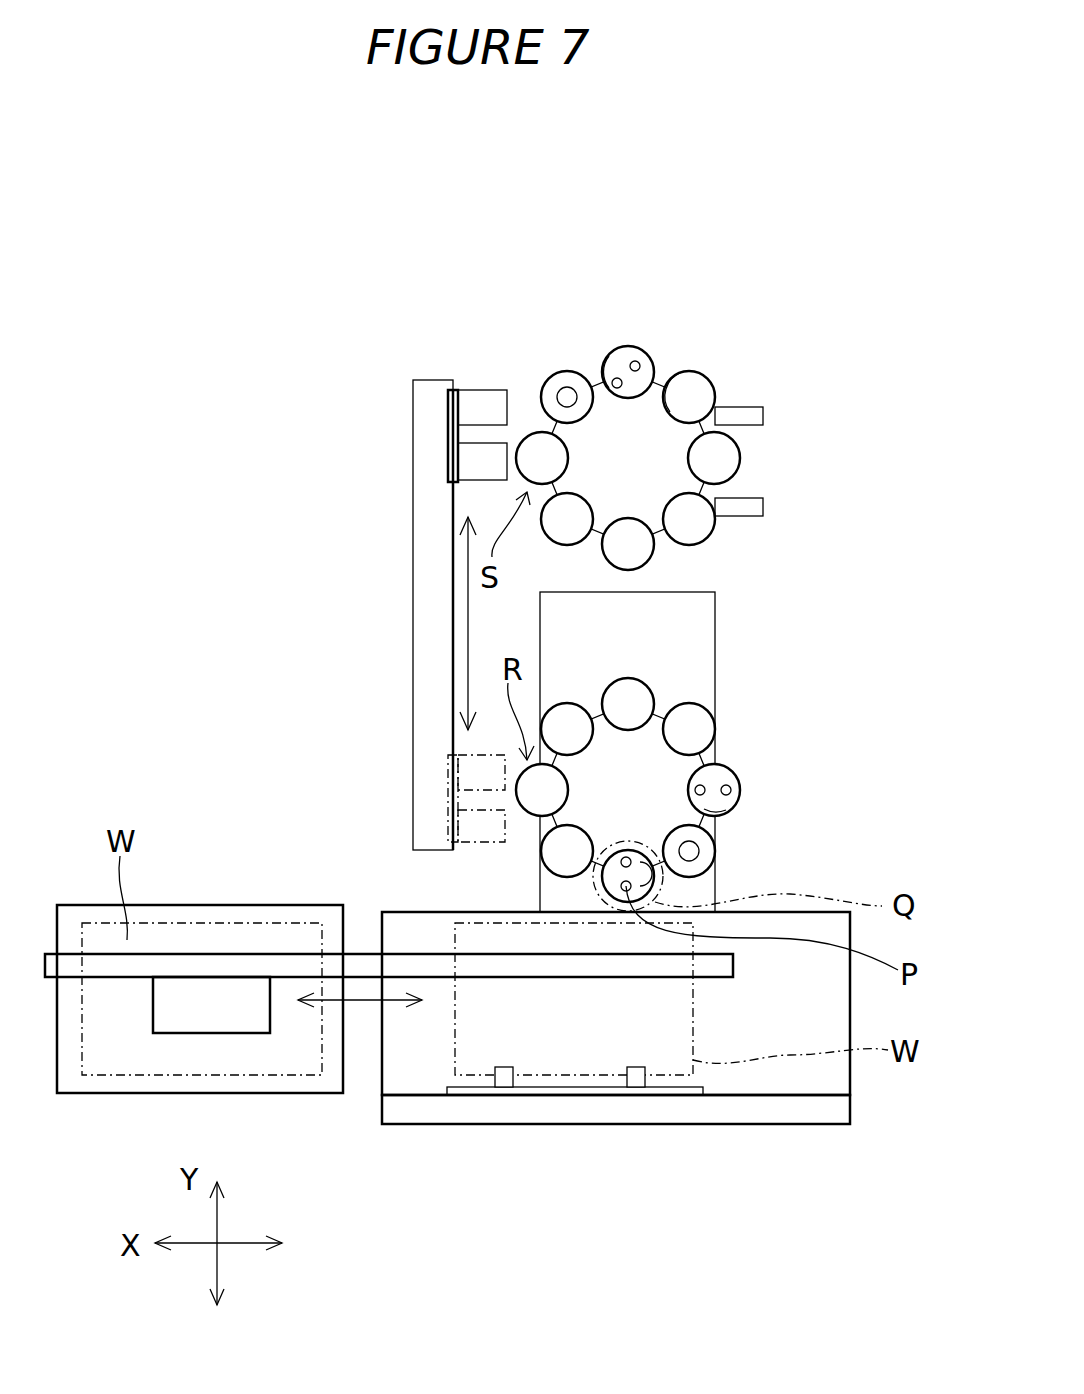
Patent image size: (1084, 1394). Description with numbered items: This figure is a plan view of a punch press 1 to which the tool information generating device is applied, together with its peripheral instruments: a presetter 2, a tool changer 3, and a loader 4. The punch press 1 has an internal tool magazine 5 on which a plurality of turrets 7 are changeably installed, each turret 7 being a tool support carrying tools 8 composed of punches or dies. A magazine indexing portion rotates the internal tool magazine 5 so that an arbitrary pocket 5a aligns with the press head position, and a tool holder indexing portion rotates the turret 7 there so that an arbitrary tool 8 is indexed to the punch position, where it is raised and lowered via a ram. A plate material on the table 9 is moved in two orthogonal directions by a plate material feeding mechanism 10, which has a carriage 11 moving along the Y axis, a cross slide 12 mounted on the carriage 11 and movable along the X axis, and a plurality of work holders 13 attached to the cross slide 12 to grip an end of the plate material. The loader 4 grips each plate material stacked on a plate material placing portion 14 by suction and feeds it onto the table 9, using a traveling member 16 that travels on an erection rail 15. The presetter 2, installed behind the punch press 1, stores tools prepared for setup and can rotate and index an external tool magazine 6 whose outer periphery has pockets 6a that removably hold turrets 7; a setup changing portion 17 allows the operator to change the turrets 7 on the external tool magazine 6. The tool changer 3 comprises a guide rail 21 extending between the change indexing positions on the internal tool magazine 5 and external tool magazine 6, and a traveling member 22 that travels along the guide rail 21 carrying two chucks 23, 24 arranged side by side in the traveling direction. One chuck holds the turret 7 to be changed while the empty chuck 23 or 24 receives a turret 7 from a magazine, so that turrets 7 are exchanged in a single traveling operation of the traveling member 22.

The punch press 1 is at (662, 747).
The presetter 2 is at (691, 427).
The tool changer 3 is at (409, 608).
The loader 4 is at (189, 1078).
The internal tool magazine 5 is at (717, 760).
The pocket 5a is at (733, 811).
The external tool magazine 6 is at (665, 372).
The pocket 6a is at (610, 367).
The turret 7 is at (656, 581).
The tool 8 is at (703, 788).
The table 9 is at (838, 1006).
The plate material feeding mechanism 10 is at (652, 1071).
The carriage 11 is at (700, 1097).
The cross slide 12 is at (455, 1096).
The work holder 13 is at (630, 1080).
The plate material placing portion 14 is at (210, 903).
The erection rail 15 is at (372, 953).
The traveling member 16 is at (240, 1015).
The setup changing portion 17 is at (745, 450).
The guide rail 21 is at (432, 663).
The traveling member 22 is at (450, 412).
The chuck 23 is at (485, 470).
The chuck 24 is at (485, 402).